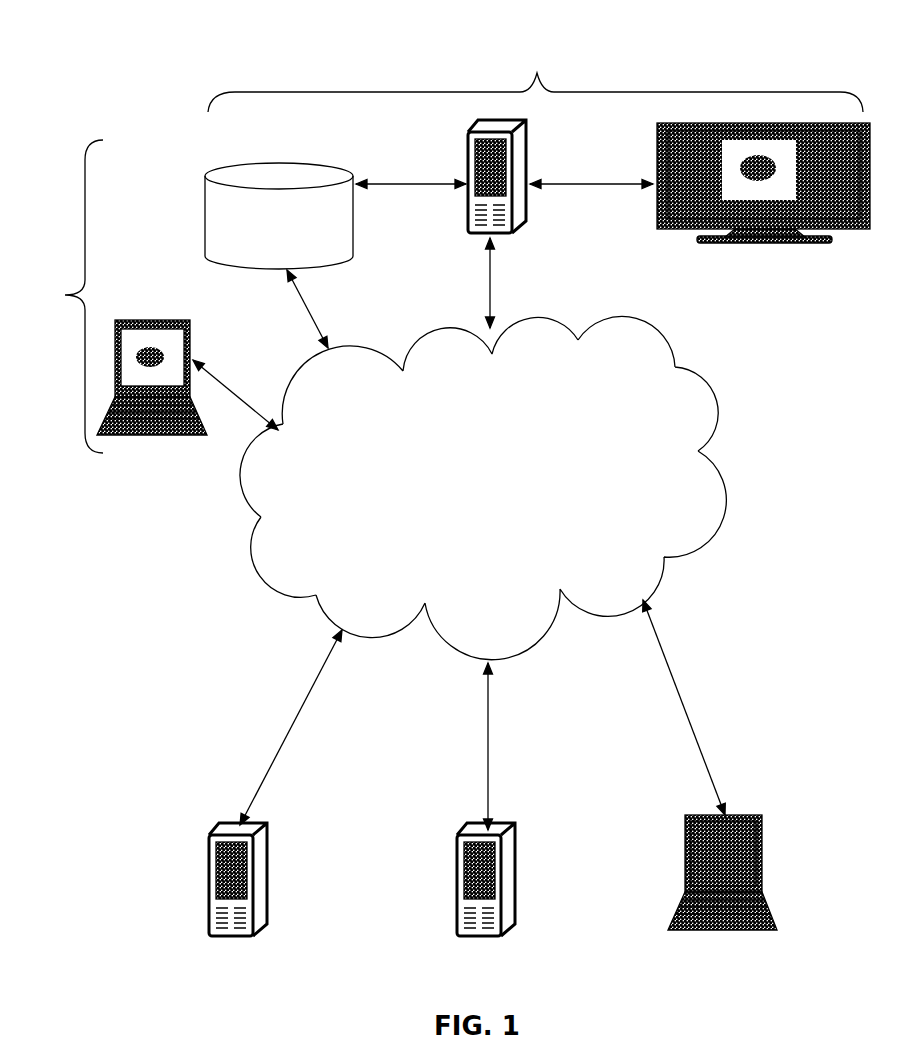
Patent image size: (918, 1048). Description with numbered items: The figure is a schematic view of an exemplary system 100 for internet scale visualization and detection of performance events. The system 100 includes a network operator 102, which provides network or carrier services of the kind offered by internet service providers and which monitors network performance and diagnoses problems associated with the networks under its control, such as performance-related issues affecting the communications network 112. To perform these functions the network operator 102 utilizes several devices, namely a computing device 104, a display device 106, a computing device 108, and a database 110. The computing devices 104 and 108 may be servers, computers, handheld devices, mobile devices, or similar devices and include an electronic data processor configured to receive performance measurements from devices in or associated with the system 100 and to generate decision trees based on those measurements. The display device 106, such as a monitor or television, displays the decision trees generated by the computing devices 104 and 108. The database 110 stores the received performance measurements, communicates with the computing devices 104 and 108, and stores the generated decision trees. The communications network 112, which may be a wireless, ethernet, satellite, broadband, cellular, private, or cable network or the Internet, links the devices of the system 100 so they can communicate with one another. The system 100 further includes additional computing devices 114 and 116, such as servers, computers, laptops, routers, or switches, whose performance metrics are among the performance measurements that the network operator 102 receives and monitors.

The system 100 is at (342, 885).
The network operator 102 is at (443, 247).
The computing device 104 is at (516, 191).
The display device 106 is at (763, 201).
The computing device 108 is at (152, 353).
The database 110 is at (279, 216).
The communications network 112 is at (483, 487).
The additional computing device 114 is at (362, 895).
The additional computing device 116 is at (722, 890).